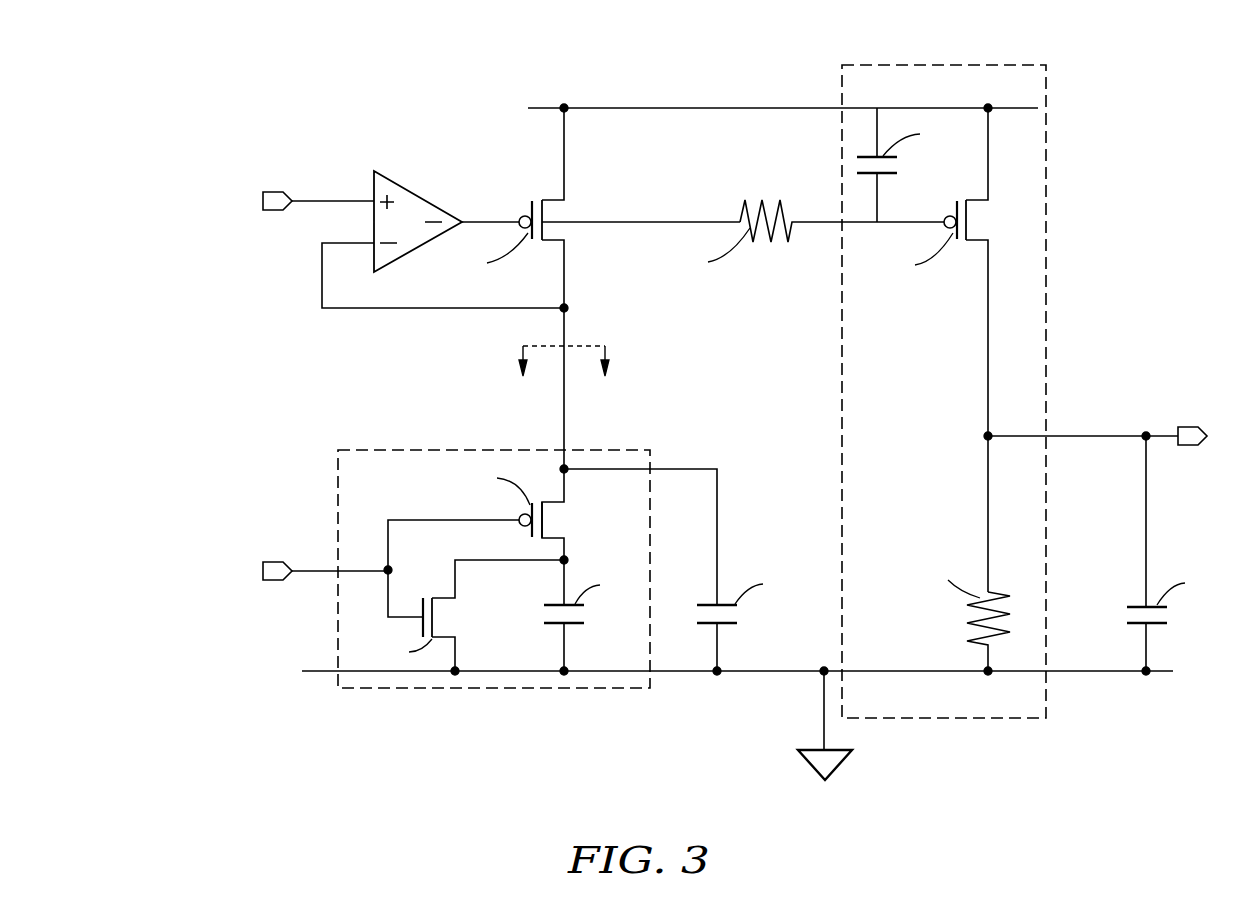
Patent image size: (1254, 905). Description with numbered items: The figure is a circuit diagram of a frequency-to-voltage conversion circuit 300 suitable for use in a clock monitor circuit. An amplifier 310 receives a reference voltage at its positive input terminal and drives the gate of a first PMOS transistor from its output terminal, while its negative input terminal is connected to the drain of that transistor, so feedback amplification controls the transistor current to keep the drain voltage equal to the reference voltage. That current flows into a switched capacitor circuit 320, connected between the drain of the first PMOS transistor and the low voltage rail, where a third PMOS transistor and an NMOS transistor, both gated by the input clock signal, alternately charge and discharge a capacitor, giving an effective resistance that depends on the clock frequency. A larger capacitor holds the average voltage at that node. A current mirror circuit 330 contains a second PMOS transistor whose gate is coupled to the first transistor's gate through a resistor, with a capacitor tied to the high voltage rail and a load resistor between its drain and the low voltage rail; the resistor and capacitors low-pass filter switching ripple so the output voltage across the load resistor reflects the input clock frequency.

The F2V conversion circuit 300 is at (203, 68).
The amplifier 310 is at (426, 198).
The switched capacitor circuit 320 is at (358, 449).
The current mirror circuit 330 is at (905, 64).